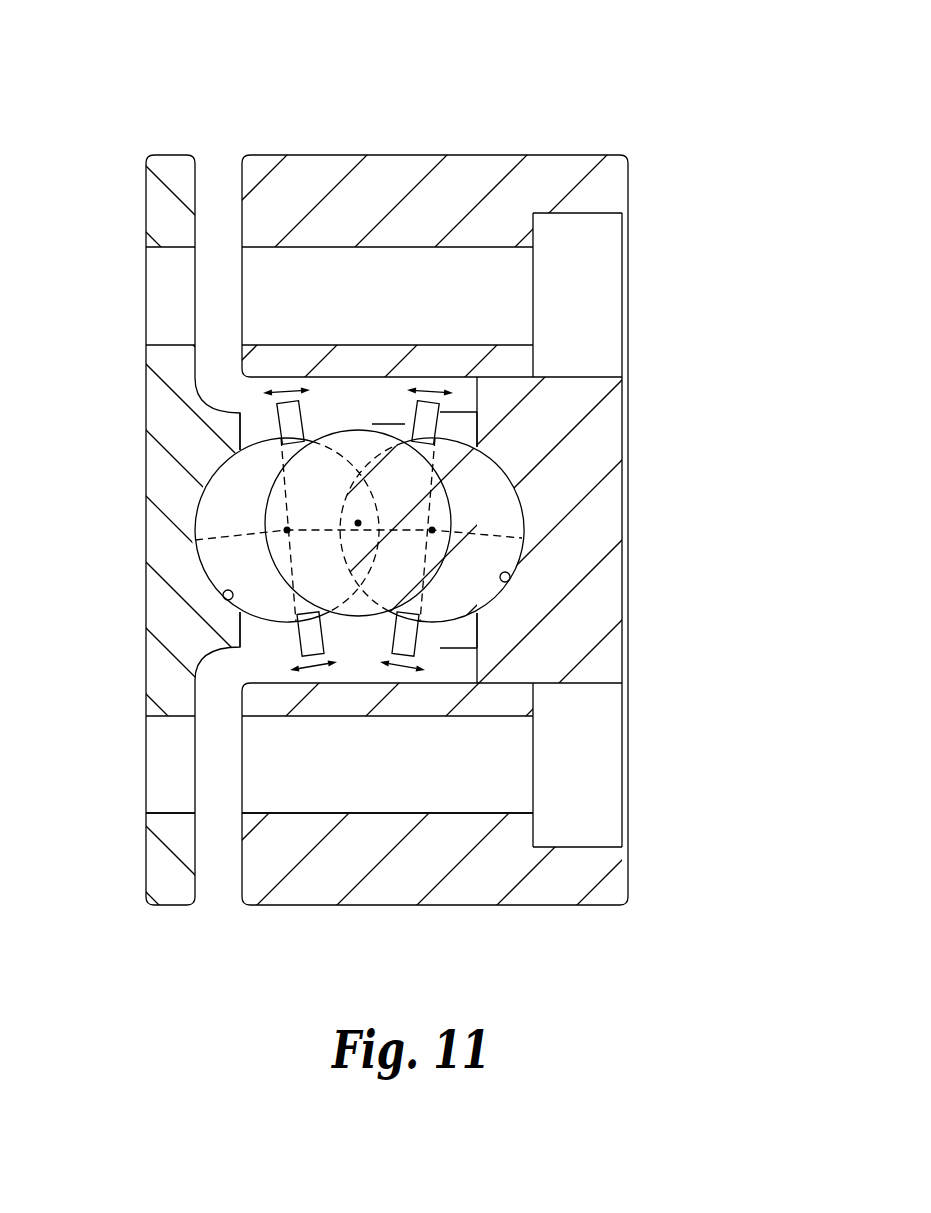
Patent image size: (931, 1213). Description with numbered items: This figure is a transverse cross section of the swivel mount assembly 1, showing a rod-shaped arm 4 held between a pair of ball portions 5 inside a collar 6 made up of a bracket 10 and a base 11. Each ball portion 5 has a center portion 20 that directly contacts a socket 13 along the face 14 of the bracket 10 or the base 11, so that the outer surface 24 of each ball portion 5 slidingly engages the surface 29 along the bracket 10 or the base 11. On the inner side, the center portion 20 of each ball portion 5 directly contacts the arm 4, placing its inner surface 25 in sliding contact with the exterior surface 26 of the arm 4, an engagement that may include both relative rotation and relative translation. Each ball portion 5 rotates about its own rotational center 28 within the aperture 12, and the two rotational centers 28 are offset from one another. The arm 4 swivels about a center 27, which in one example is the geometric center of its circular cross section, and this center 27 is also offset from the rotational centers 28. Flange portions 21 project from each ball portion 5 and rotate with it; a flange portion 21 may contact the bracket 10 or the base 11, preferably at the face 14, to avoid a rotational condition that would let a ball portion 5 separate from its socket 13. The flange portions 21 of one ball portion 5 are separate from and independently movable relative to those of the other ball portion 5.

The swivel mount assembly 1 is at (540, 105).
The arm 4 is at (353, 445).
The ball portion 5 is at (243, 468).
The collar 6 is at (285, 882).
The bracket 10 is at (615, 182).
The base 11 is at (163, 207).
The aperture 12 is at (388, 412).
The socket 13 is at (207, 520).
The face 14 is at (300, 636).
The center portion 20 is at (203, 535).
The flange portion 21 is at (283, 410).
The outer surface 24 is at (224, 597).
The inner surface 25 is at (263, 510).
The exterior surface 26 is at (360, 618).
The center 27 is at (358, 523).
The rotational center 28 is at (287, 530).
The surface 29 is at (240, 632).